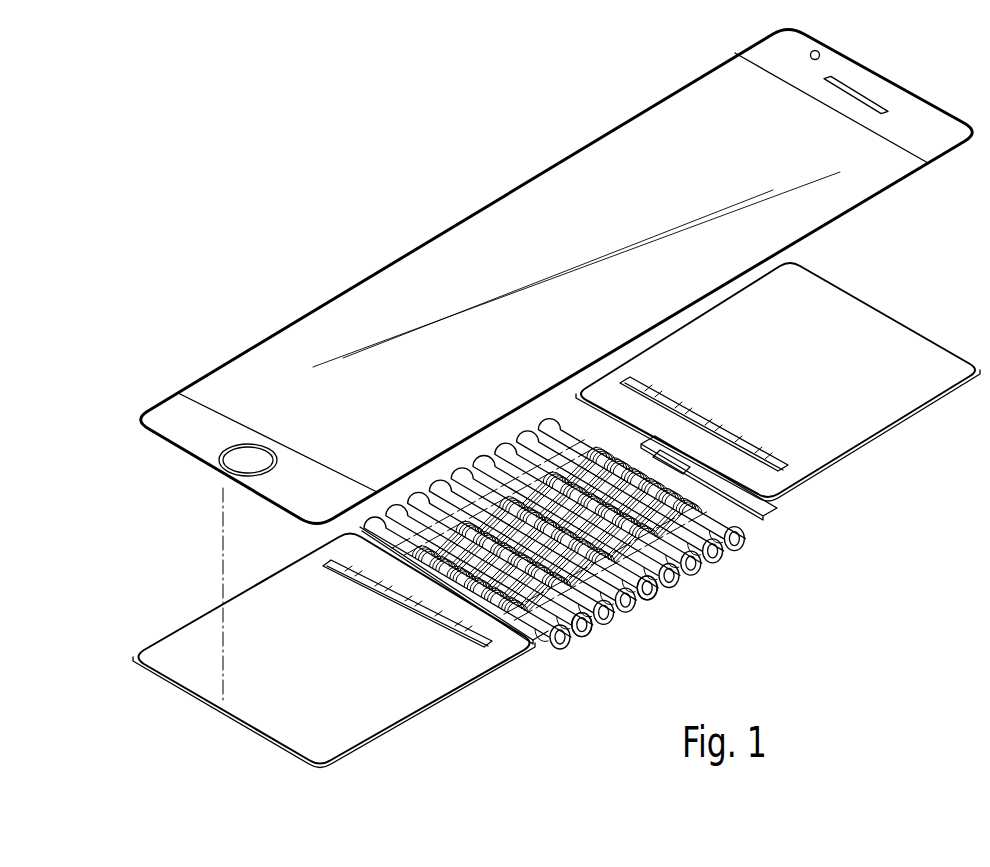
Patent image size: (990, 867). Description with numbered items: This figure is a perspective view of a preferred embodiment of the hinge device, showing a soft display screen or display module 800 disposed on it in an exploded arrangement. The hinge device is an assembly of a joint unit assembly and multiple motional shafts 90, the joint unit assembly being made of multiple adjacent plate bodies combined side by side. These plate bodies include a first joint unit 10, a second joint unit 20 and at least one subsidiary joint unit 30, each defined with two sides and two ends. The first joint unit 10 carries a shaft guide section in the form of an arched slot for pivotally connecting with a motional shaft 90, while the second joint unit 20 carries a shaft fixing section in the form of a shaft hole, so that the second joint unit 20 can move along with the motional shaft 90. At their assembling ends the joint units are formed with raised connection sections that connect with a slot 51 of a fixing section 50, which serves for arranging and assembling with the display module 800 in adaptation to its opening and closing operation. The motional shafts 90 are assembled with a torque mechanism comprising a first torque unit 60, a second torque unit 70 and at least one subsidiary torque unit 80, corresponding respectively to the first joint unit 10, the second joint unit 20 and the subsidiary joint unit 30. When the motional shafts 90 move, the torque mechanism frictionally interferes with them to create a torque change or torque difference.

The display module 800 is at (535, 195).
The fixing section 50 is at (885, 322).
The slot 51 is at (372, 598).
The first joint unit 10 is at (515, 632).
The first torque unit 60 is at (462, 599).
The motional shaft 90 is at (476, 443).
The subsidiary joint unit 30 is at (658, 597).
The subsidiary torque unit 80 is at (582, 638).
The second joint unit 20 is at (728, 480).
The second torque unit 70 is at (670, 451).